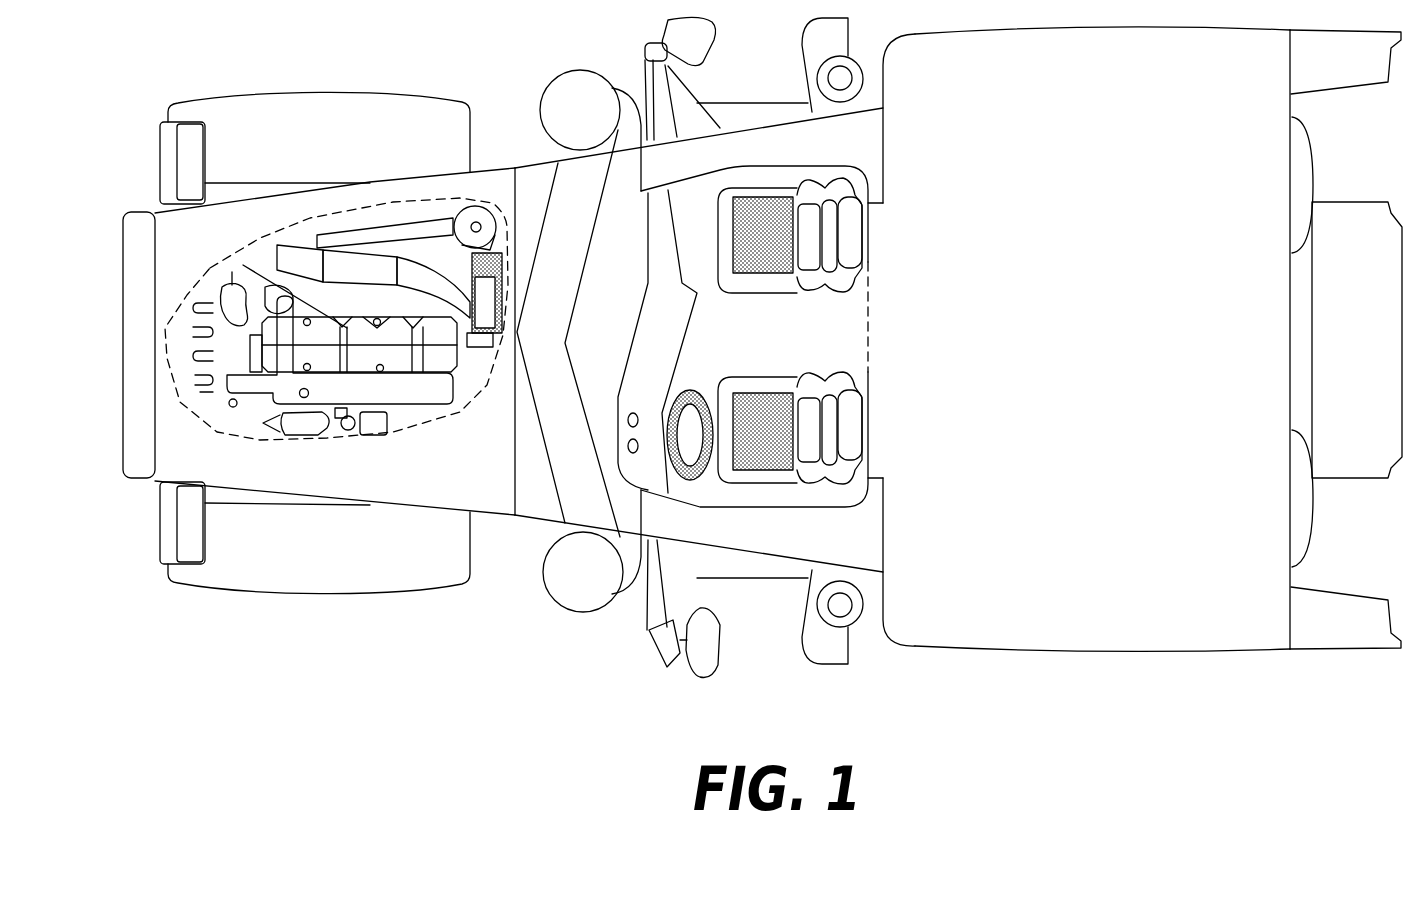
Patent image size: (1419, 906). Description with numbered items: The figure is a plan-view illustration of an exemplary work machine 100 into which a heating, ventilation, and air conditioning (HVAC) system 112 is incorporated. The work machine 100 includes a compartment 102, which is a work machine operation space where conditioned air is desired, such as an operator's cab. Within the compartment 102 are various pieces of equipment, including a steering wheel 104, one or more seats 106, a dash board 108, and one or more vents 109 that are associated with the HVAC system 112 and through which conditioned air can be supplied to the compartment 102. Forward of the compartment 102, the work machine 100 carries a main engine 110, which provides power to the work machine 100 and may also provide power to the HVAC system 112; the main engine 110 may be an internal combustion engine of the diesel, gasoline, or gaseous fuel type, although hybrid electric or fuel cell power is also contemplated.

The work machine 100 is at (257, 90).
The compartment 102 is at (840, 325).
The steering wheel 104 is at (697, 480).
The seats 106 is at (753, 197).
The dash board 108 is at (649, 200).
The vents 109 is at (633, 446).
The main engine 110 is at (347, 398).
The heating, ventilation, and air conditioning (HVAC) system 112 is at (470, 348).